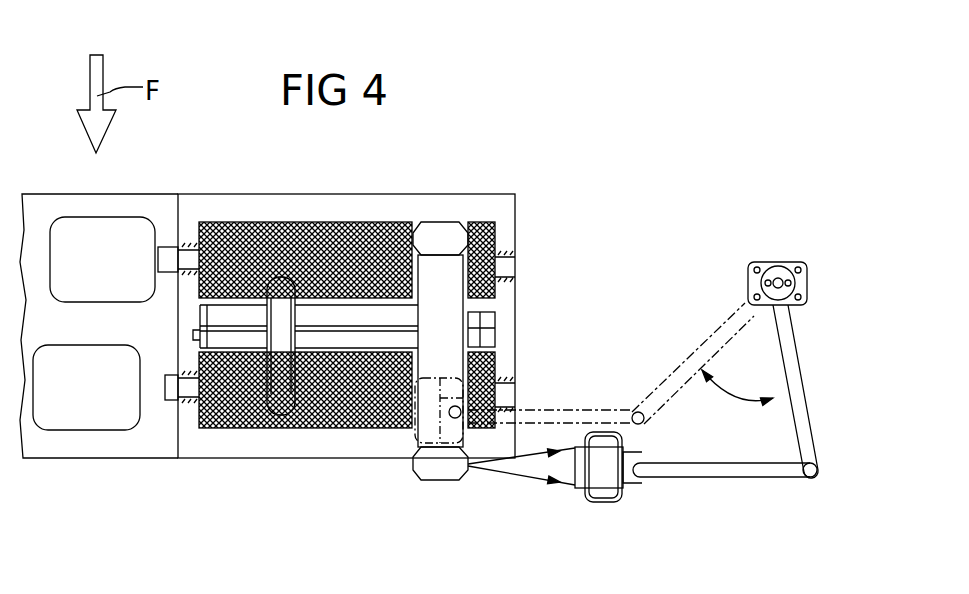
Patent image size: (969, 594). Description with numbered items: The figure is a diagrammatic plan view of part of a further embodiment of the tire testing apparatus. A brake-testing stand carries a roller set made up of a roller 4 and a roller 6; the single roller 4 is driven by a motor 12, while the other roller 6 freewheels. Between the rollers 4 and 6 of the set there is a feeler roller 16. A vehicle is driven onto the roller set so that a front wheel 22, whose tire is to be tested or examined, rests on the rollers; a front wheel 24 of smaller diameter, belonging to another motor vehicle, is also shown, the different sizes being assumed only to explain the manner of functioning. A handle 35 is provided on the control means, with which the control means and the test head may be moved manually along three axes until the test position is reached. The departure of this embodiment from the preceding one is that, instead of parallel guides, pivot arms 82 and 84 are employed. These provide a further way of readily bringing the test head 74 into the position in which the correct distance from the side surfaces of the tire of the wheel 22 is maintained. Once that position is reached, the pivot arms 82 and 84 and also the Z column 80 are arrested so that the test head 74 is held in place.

The roller 4 is at (325, 222).
The roller 6 is at (224, 430).
The motor 12 is at (120, 228).
The feeler roller 16 is at (215, 315).
The front wheel 22 is at (442, 232).
The front wheel 24 is at (281, 430).
The handle 35 is at (615, 500).
The test head 74 is at (424, 425).
The Z column 80 is at (770, 262).
The pivot arm 82 is at (742, 478).
The pivot arm 84 is at (800, 360).